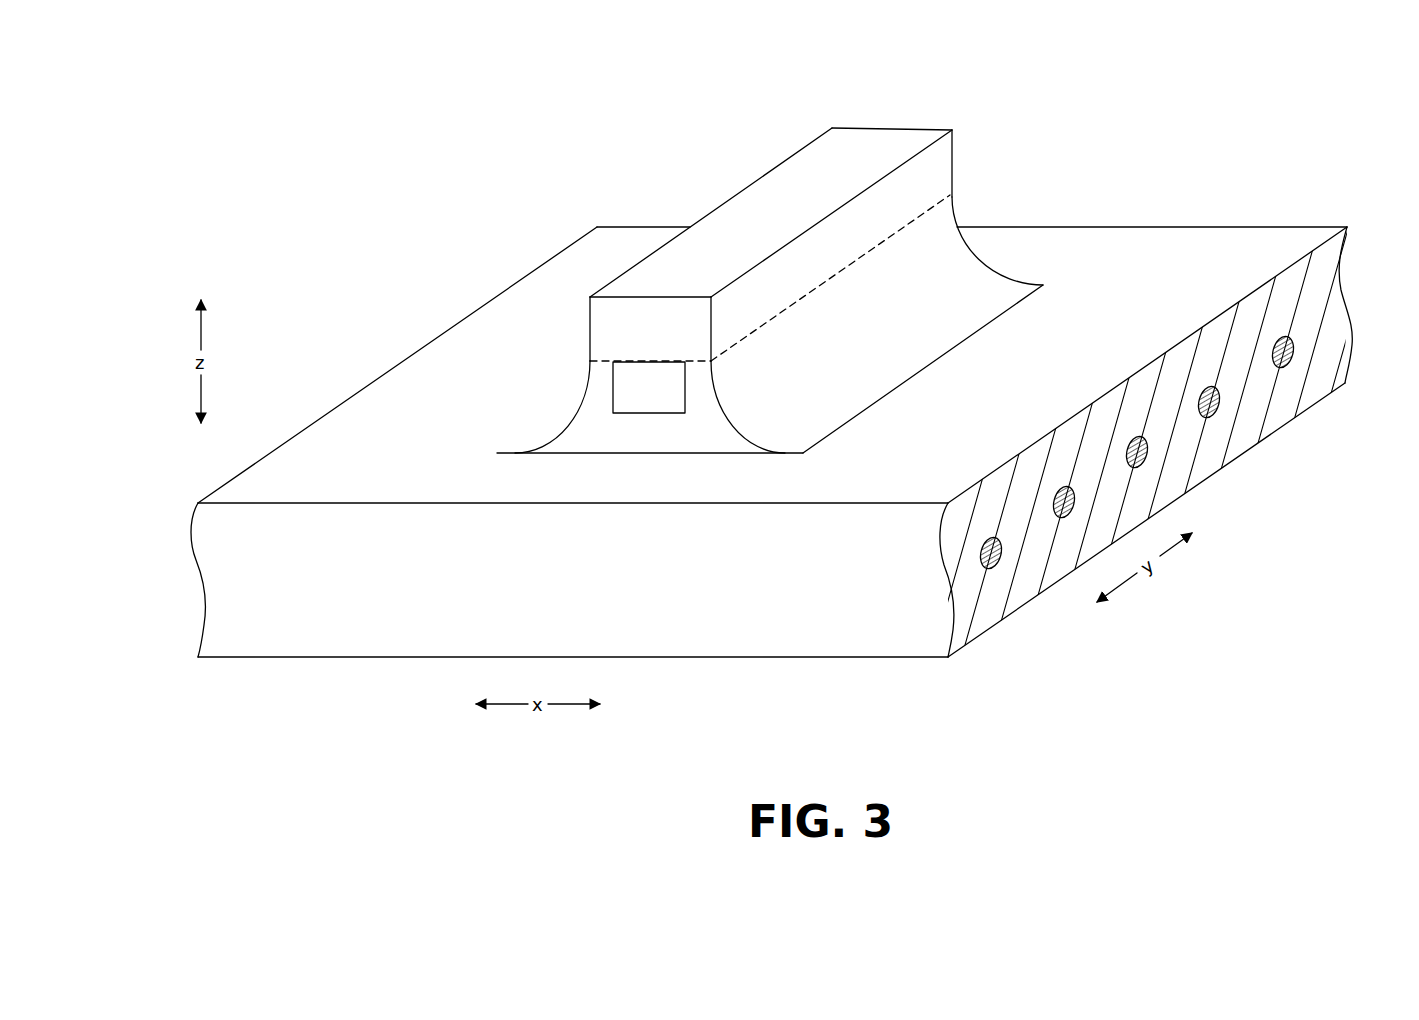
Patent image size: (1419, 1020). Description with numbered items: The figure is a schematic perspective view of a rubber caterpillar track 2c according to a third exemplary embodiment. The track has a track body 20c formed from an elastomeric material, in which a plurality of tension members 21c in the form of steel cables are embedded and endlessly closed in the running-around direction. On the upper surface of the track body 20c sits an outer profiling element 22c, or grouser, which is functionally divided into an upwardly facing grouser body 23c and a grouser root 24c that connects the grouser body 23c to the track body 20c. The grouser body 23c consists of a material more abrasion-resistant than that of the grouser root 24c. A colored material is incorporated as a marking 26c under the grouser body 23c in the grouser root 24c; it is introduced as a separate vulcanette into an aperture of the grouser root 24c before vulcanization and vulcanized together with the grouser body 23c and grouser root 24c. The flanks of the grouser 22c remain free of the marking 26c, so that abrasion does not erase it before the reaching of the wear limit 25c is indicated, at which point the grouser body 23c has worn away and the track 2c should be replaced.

The caterpillar track 2c is at (759, 494).
The track body 20c is at (225, 585).
The tension members 21c is at (1219, 401).
The outer profiling element 22c is at (837, 267).
The grouser body 23c is at (938, 168).
The grouser root 24c is at (967, 285).
The wear limit 25c is at (872, 255).
The marking 26c is at (628, 390).